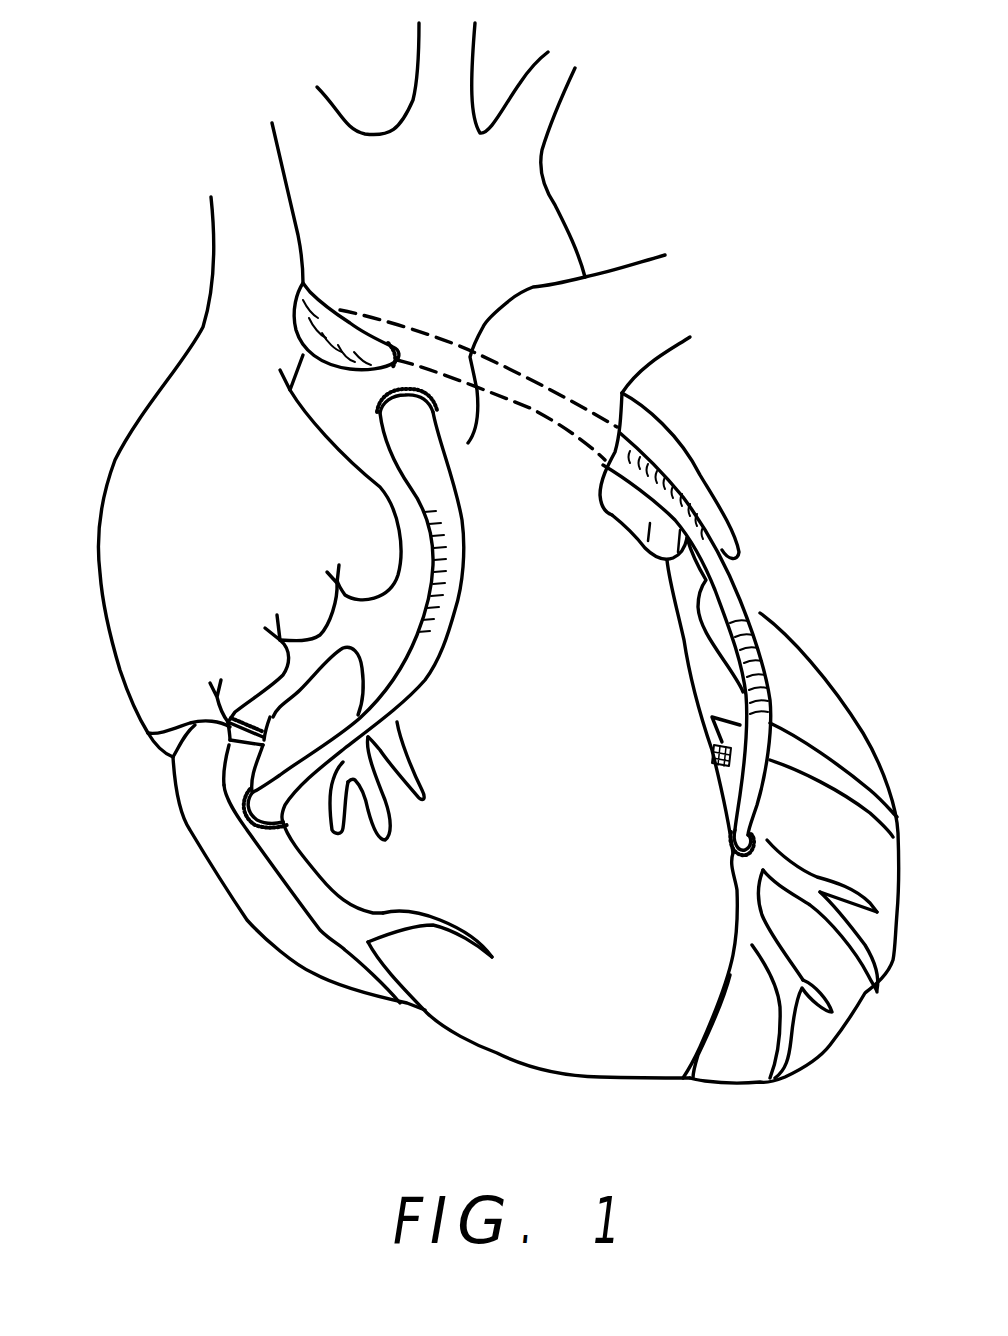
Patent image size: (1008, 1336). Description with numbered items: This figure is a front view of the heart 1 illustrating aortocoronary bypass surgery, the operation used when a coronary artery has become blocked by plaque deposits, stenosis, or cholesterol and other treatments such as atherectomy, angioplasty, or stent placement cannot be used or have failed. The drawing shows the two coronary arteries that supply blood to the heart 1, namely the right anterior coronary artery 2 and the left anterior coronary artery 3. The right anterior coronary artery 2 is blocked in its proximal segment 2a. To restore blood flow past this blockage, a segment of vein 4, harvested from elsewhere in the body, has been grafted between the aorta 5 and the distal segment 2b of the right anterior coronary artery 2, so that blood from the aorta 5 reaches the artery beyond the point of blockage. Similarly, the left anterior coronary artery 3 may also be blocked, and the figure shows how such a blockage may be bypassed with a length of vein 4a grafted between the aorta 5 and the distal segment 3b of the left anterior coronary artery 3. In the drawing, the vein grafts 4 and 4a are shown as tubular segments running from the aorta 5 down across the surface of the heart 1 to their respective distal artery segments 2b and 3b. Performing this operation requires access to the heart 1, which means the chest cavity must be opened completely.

The heart 1 is at (532, 1040).
The right anterior coronary artery 2 is at (237, 785).
The proximal segment of the right anterior coronary artery 2a is at (147, 732).
The distal segment of the right anterior coronary artery 2b is at (295, 875).
The left anterior coronary artery 3 is at (733, 783).
The distal segment of the left anterior coronary artery 3b is at (740, 937).
The segment of vein 4 is at (450, 585).
The length of vein 4a is at (735, 587).
The aorta 5 is at (528, 215).